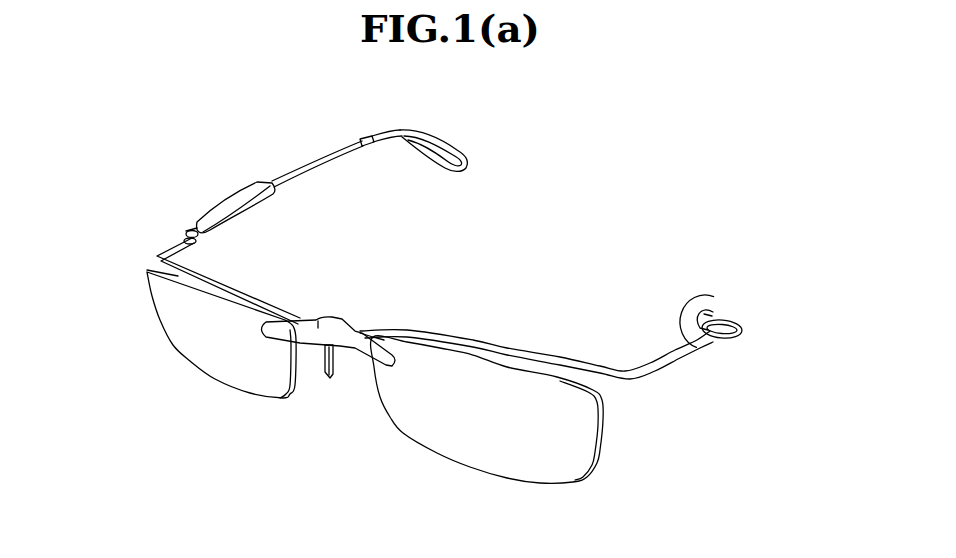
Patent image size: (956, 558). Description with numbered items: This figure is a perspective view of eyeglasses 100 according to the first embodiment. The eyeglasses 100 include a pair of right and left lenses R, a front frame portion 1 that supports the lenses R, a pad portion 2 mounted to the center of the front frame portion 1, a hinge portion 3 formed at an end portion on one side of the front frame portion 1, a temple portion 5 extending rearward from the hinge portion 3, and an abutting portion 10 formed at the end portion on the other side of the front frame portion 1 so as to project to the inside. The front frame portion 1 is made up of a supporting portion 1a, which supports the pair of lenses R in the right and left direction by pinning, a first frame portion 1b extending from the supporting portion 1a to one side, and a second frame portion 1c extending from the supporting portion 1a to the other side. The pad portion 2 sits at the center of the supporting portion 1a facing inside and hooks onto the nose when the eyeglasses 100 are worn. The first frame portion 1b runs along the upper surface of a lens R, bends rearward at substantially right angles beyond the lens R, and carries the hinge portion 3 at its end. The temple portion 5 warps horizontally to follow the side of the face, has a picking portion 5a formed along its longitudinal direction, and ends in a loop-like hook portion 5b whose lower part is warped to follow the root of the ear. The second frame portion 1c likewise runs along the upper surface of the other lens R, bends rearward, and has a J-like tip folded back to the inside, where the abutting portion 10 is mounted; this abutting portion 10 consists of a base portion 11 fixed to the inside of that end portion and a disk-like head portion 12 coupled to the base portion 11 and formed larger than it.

The eyeglasses 100 is at (665, 196).
The front frame portion 1 is at (380, 277).
The supporting portion 1a is at (318, 320).
The first frame portion 1b is at (263, 285).
The second frame portion 1c is at (470, 340).
The pad portion 2 is at (336, 376).
The hinge portion 3 is at (187, 232).
The temple portion 5 is at (337, 143).
The picking portion 5a is at (242, 197).
The hook portion 5b is at (458, 147).
The abutting portion 10 is at (781, 277).
The base portion 11 is at (735, 343).
The head portion 12 is at (725, 298).
The lens R is at (232, 384).